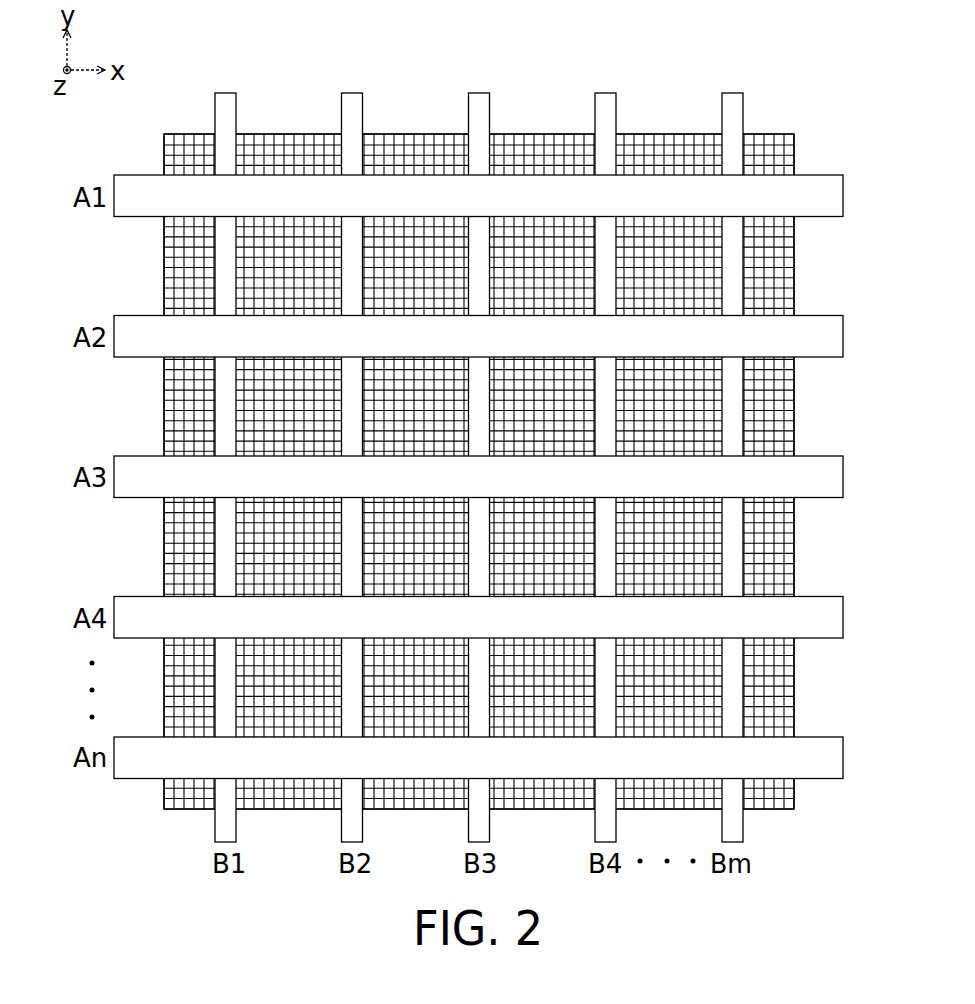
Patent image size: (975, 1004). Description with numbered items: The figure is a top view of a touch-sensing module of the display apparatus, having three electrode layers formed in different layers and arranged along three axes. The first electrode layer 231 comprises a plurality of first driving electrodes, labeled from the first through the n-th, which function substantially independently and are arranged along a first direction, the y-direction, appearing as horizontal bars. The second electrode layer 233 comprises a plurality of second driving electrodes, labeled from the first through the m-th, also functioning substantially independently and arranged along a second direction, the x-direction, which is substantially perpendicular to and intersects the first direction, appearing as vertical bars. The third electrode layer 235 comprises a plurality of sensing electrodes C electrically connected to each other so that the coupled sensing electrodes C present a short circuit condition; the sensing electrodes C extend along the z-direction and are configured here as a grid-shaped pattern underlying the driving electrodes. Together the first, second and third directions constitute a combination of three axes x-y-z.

The first electrode layer 231 is at (821, 173).
The second electrode layer 233 is at (732, 92).
The third electrode layer 235 is at (767, 133).
The sensing electrodes C is at (179, 806).